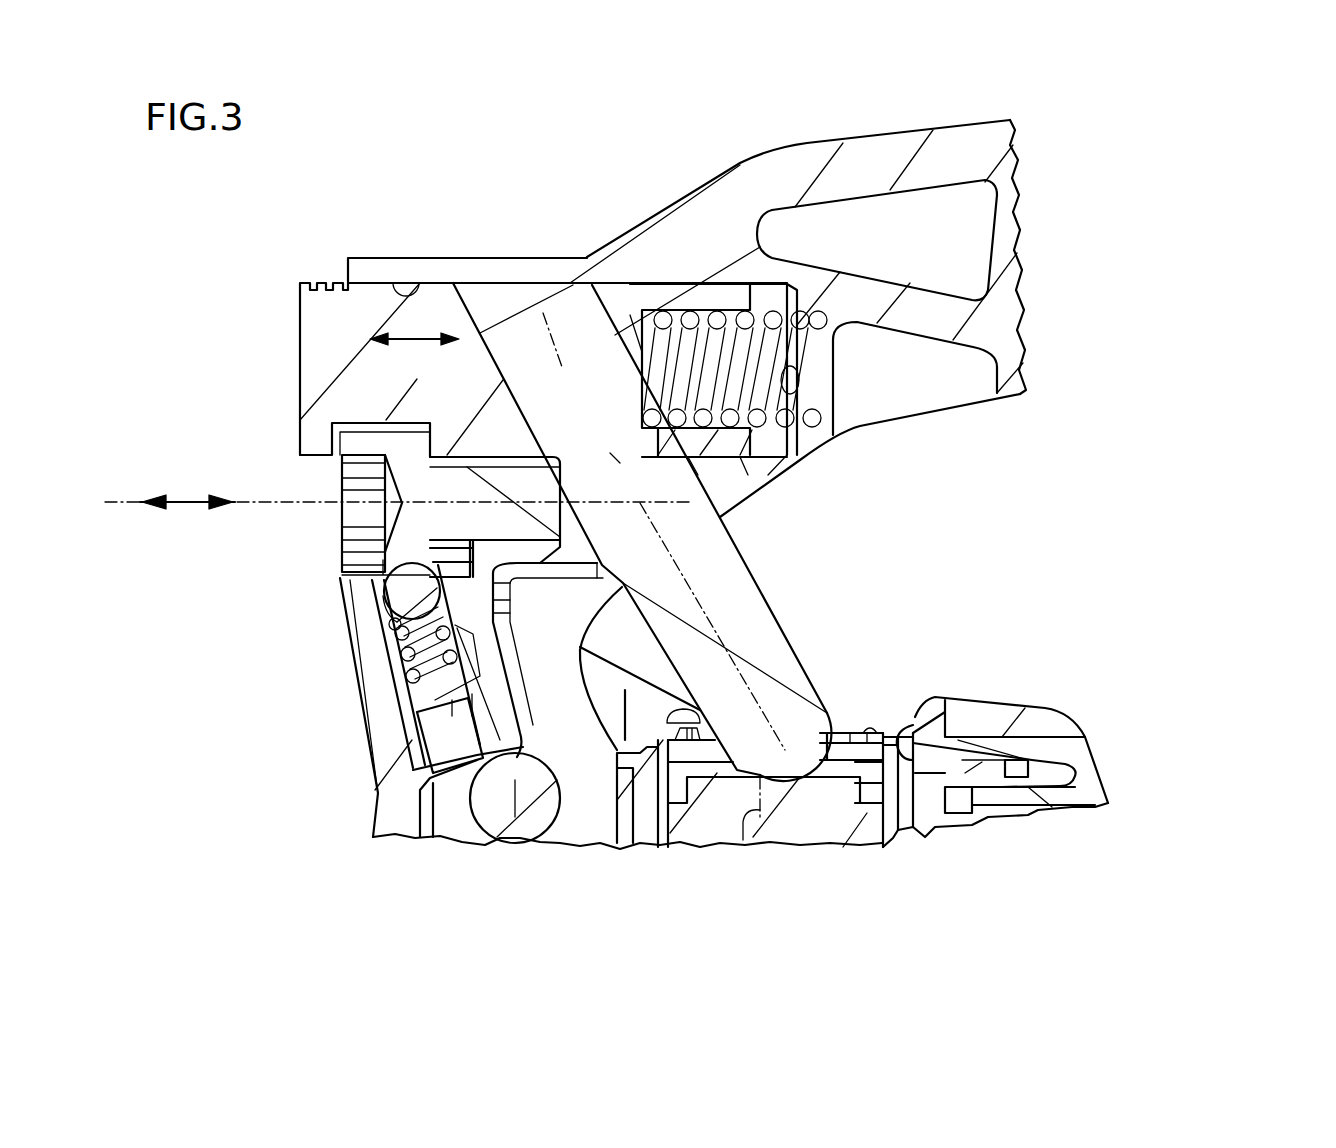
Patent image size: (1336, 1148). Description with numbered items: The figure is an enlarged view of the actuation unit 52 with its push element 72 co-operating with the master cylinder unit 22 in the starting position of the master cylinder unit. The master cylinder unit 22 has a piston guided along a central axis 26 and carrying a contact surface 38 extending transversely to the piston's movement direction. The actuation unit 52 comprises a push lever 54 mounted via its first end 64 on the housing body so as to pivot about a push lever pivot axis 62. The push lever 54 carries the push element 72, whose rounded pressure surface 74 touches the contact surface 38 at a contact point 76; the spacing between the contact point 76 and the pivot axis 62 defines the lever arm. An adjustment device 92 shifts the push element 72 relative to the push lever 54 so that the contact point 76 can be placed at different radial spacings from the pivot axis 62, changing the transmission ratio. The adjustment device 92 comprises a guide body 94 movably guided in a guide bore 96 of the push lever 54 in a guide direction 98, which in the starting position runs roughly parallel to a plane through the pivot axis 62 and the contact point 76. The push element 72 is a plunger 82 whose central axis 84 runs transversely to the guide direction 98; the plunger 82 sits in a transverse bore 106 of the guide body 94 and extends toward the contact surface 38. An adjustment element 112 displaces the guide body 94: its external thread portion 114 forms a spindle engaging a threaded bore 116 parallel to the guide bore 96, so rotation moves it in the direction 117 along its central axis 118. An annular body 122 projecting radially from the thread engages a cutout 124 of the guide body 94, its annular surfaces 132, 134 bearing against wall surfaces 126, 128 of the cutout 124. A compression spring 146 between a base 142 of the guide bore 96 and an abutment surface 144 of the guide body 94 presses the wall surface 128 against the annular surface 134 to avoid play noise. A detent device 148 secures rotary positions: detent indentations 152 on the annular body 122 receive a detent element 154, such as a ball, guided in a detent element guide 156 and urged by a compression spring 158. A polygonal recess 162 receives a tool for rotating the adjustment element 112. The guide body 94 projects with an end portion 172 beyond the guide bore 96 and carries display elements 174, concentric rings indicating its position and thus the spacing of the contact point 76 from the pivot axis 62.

The master cylinder unit 22 is at (847, 803).
The central axis 26 is at (760, 820).
The contact surface 38 is at (870, 724).
The actuation unit 52 is at (1018, 158).
The push lever 54 is at (785, 197).
The push lever pivot axis 62 is at (514, 828).
The first end 64 is at (447, 820).
The push element 72 is at (723, 575).
The pressure surface 74 is at (800, 780).
The contact point 76 is at (825, 715).
The plunger 82 is at (747, 622).
The central axis 84 is at (745, 675).
The adjustment device 92 is at (495, 309).
The guide body 94 is at (382, 313).
The guide bore 96 is at (415, 337).
The guide direction 98 is at (455, 327).
The transverse bore 106 is at (592, 322).
The adjustment element 112 is at (423, 519).
The external thread portion 114 is at (483, 440).
The threaded bore 116 is at (565, 470).
The direction 117 is at (175, 507).
The central axis 118 is at (690, 505).
The annular body 122 is at (343, 573).
The cutout 124 is at (343, 433).
The wall surface 126 is at (343, 463).
The wall surface 128 is at (415, 418).
The annular surface 132 is at (355, 565).
The annular surface 134 is at (495, 598).
The base 142 is at (800, 368).
The abutment surface 144 is at (660, 318).
The compression spring 146 is at (707, 320).
The detent device 148 is at (397, 623).
The detent indentations 152 is at (383, 612).
The detent element 154 is at (497, 627).
The detent element guide 156 is at (410, 670).
The compression spring 158 is at (413, 703).
The polygonal recess 162 is at (347, 508).
The end portion 172 is at (311, 356).
The display elements 174 is at (330, 281).